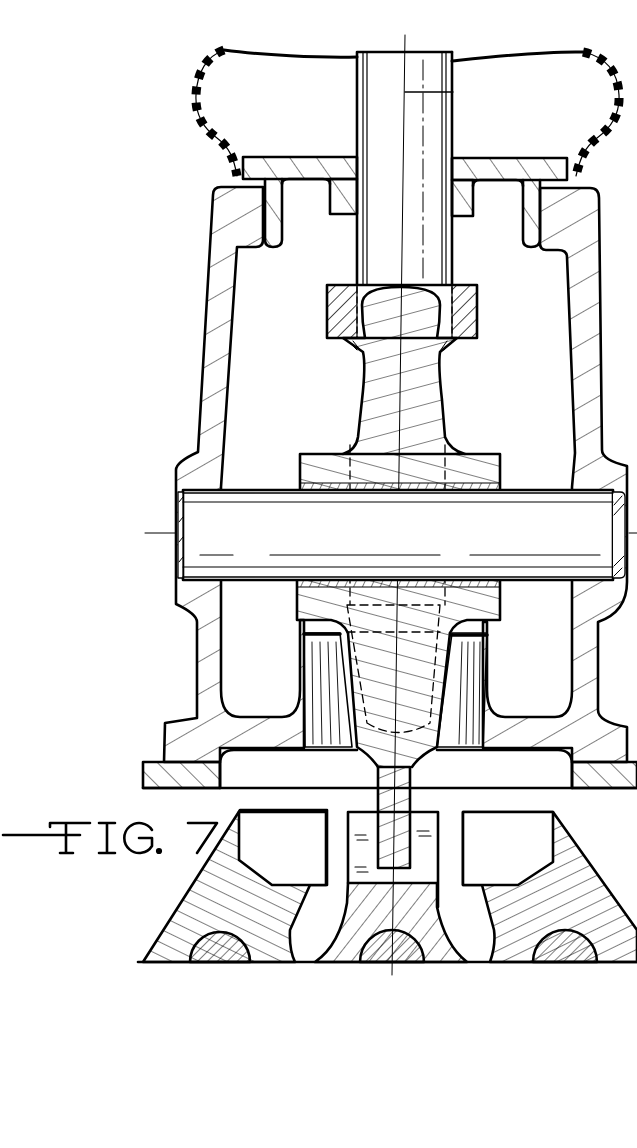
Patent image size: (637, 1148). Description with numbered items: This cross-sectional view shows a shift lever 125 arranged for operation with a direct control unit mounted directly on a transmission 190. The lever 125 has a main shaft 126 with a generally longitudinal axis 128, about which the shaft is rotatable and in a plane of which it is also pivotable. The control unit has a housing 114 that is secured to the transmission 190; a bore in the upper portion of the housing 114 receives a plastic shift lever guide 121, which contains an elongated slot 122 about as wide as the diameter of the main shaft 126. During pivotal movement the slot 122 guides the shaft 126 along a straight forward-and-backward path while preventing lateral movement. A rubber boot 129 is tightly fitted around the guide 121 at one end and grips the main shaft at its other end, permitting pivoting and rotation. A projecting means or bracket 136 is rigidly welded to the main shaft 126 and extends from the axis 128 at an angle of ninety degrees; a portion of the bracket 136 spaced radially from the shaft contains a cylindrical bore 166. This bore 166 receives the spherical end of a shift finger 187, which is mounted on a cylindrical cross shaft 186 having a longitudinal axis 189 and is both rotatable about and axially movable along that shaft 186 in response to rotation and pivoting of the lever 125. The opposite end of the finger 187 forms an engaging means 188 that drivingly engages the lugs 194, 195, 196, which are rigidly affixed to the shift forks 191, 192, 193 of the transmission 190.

The housing 114 is at (206, 318).
The shift lever guide 121 is at (264, 172).
The elongated slot 122 is at (353, 199).
The shift lever 125 is at (357, 92).
The main shaft 126 is at (453, 137).
The longitudinal axis 128 is at (454, 91).
The rubber boot 129 is at (195, 98).
The projecting means 136 is at (338, 318).
The cylindrical bore 166 is at (366, 287).
The cross shaft 186 is at (212, 507).
The shift finger 187 is at (447, 399).
The engaging means 188 is at (377, 802).
The longitudinal axis 189 is at (157, 531).
The transmission 190 is at (153, 761).
The shift fork 191 is at (568, 923).
The shift fork 192 is at (380, 938).
The shift fork 193 is at (187, 911).
The lug 194 is at (544, 862).
The lug 195 is at (423, 852).
The lug 196 is at (310, 870).